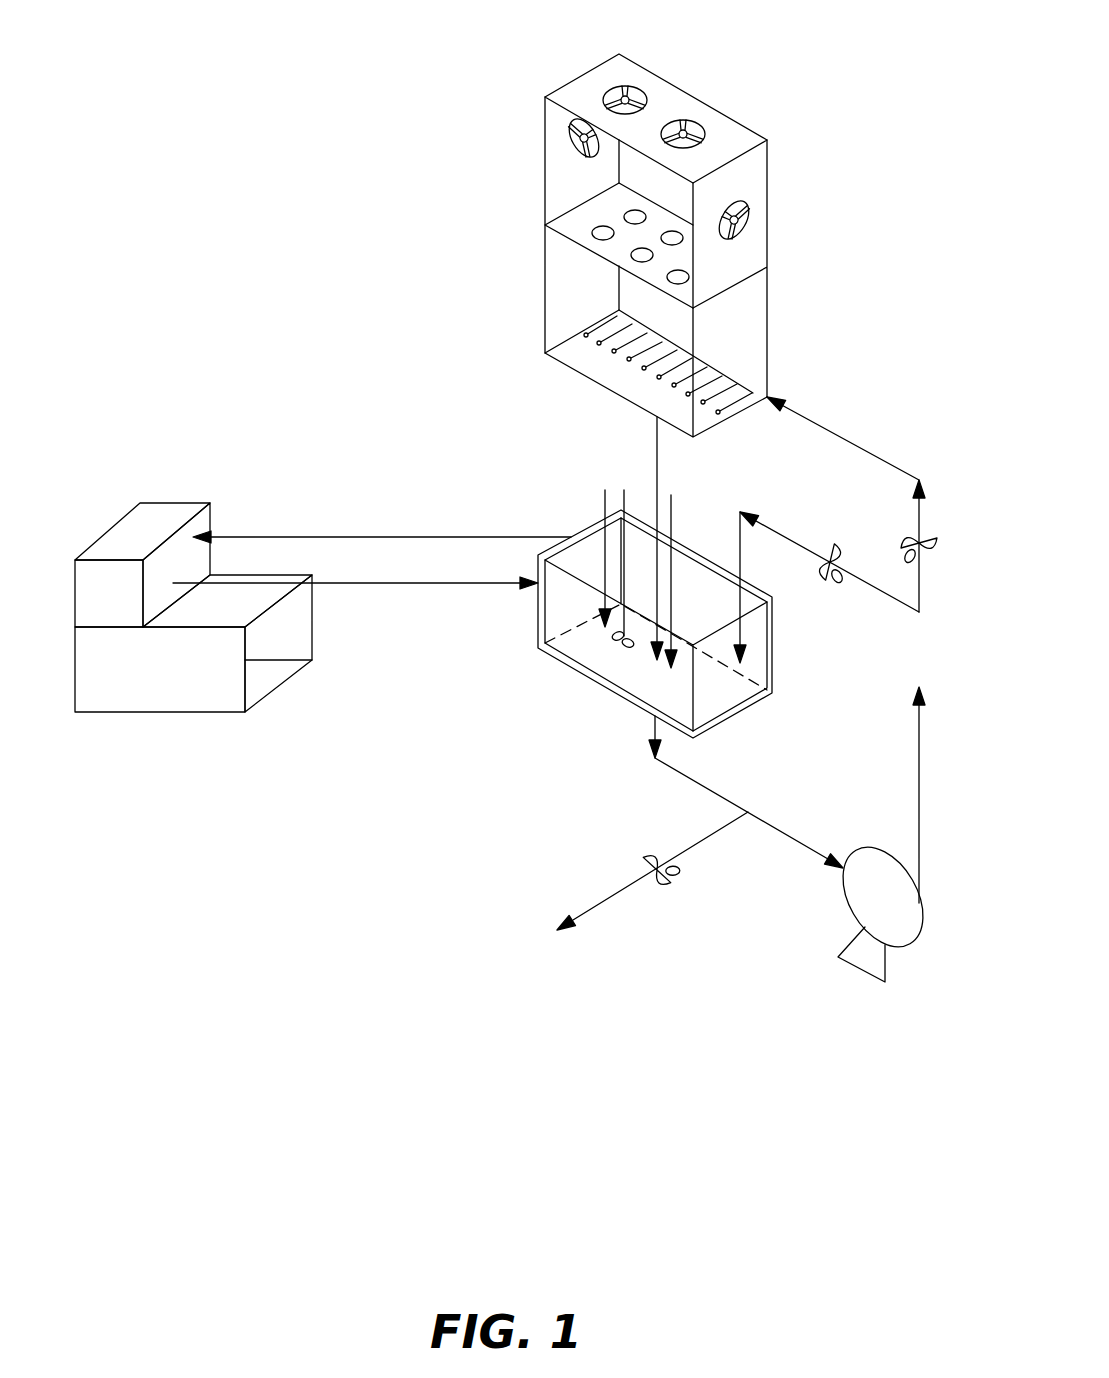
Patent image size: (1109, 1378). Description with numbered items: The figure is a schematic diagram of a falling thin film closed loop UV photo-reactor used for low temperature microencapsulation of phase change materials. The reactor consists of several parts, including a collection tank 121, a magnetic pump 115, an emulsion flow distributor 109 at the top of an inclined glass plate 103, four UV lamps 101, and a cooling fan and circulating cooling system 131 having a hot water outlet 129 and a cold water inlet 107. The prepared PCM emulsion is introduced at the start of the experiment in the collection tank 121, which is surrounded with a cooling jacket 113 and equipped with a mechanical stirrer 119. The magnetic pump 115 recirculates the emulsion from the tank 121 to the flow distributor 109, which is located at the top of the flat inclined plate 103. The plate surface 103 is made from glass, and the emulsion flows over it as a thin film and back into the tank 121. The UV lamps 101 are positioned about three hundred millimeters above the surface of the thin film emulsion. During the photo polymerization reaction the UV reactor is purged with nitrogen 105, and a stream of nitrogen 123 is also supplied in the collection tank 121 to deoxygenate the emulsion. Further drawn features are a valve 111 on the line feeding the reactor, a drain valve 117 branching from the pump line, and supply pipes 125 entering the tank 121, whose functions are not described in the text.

The UV lamps 101 is at (680, 130).
The inclined glass plate 103 is at (599, 227).
The nitrogen purge 105 is at (563, 283).
The cold water inlet 107 is at (548, 353).
The emulsion flow distributor 109 is at (767, 331).
The inlet valve 111 is at (923, 528).
The cooling jacket 113 is at (772, 690).
The magnetic pump 115 is at (908, 947).
The drain valve 117 is at (613, 897).
The mechanical stirrer 119 is at (610, 652).
The collection tank 121 is at (545, 650).
The stream of nitrogen 123 is at (672, 566).
The supply pipes 125 is at (602, 502).
The hot water outlet 129 is at (428, 536).
The cooling fan and circulating cooling system 131 is at (195, 713).